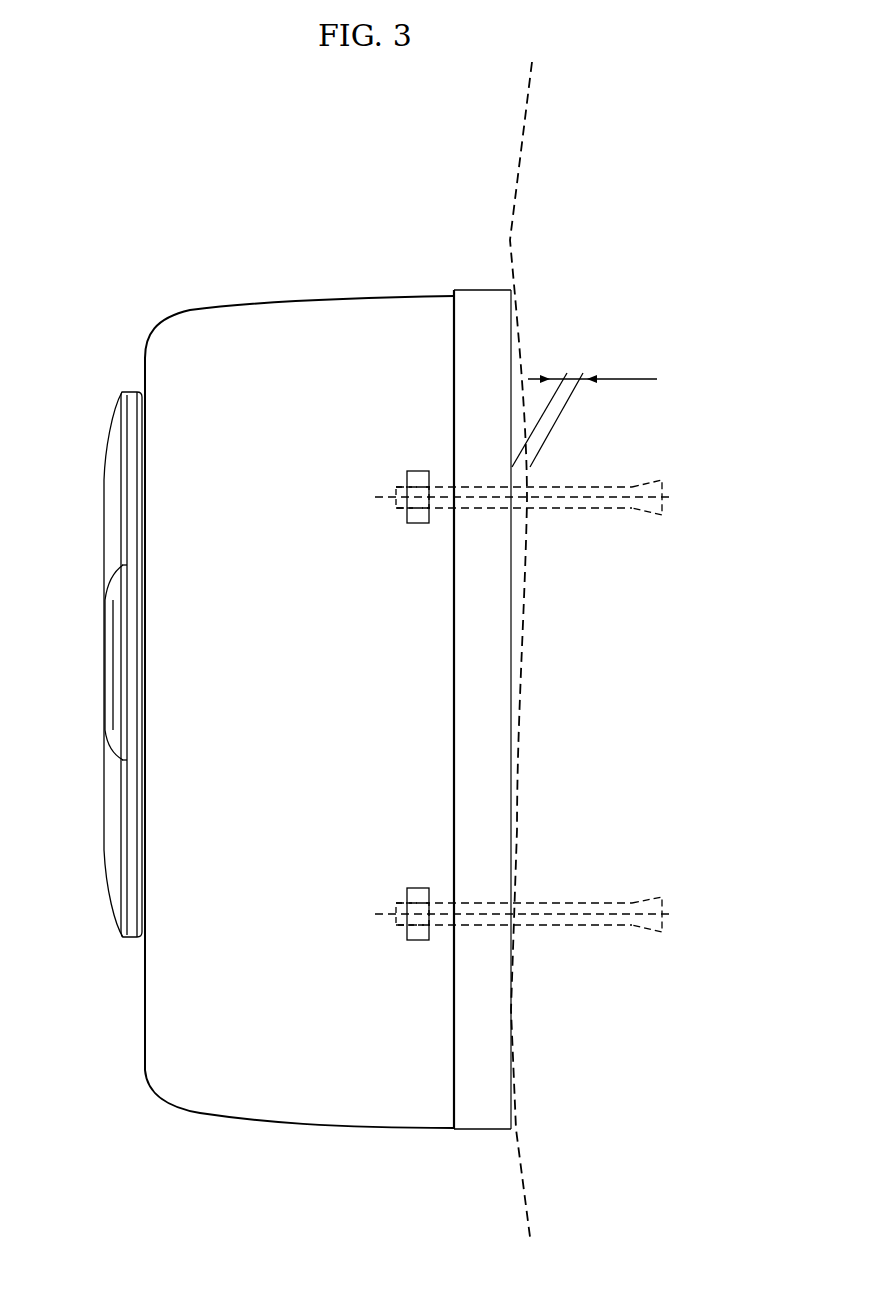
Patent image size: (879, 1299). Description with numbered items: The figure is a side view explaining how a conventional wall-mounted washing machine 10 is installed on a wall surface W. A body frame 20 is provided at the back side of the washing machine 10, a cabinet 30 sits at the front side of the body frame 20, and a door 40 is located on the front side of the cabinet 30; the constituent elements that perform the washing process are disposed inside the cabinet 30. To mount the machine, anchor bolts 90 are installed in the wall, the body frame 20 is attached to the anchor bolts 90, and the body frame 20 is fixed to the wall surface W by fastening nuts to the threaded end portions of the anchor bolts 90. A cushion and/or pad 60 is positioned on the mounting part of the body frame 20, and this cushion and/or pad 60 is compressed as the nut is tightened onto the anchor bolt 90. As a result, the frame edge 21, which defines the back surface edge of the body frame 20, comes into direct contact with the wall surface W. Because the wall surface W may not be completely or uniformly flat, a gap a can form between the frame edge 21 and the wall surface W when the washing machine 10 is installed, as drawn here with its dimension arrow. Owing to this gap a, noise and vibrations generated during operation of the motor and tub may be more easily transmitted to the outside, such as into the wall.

The washing machine 10 is at (170, 272).
The body frame 20 is at (507, 684).
The frame edge 21 is at (511, 710).
The cabinet 30 is at (291, 332).
The door 40 is at (97, 543).
The cushion and/or pad 60 is at (512, 545).
The anchor bolts 90 is at (644, 481).
The wall surface W is at (519, 150).
The gap a is at (652, 377).